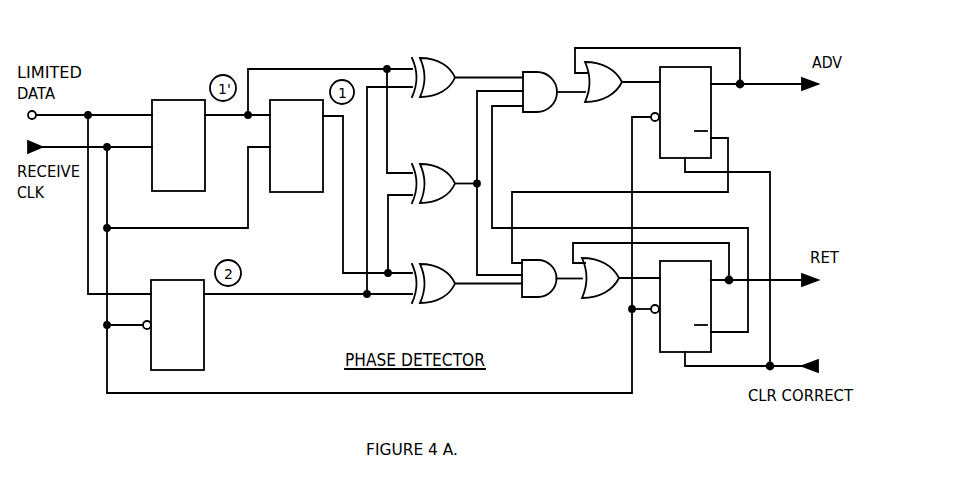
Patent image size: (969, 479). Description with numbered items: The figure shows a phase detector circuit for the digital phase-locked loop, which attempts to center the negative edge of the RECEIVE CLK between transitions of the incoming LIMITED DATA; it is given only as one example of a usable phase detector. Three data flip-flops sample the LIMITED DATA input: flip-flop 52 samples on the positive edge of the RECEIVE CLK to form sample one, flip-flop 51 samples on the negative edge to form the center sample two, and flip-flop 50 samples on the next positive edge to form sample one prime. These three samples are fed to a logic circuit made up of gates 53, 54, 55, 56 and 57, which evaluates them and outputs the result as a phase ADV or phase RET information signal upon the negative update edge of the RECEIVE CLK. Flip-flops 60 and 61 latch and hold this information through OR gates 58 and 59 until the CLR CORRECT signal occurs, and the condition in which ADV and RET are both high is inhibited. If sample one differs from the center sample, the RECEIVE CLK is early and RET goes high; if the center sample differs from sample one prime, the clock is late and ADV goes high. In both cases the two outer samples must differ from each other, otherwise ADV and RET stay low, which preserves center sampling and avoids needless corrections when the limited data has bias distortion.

The data flip-flop 50 is at (282, 128).
The data flip-flop 51 is at (277, 228).
The data flip-flop 52 is at (341, 188).
The gate 53 is at (467, 65).
The gate 54 is at (467, 183).
The gate 55 is at (467, 273).
The gate 56 is at (620, 192).
The gate 57 is at (620, 217).
The OR gate 58 is at (657, 87).
The OR gate 59 is at (651, 282).
The flip-flop 60 is at (734, 193).
The flip-flop 61 is at (734, 329).